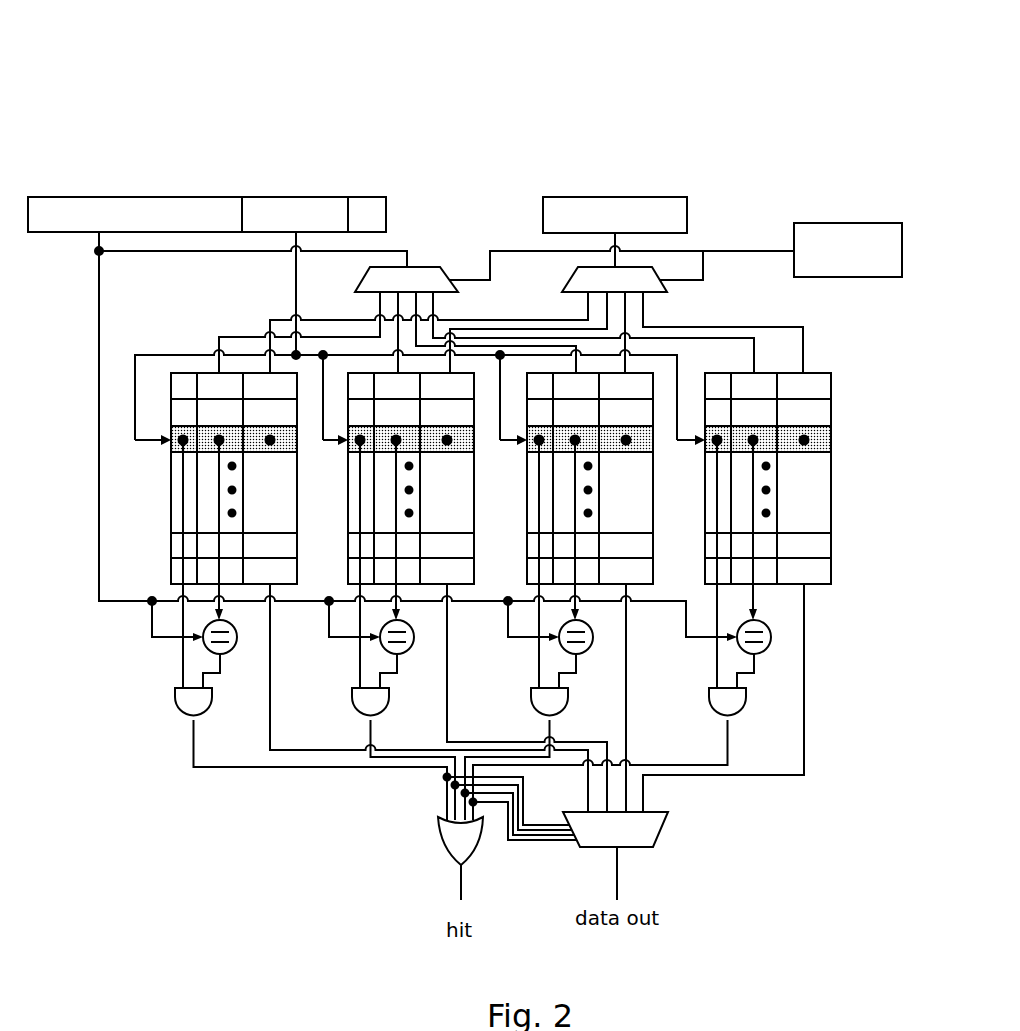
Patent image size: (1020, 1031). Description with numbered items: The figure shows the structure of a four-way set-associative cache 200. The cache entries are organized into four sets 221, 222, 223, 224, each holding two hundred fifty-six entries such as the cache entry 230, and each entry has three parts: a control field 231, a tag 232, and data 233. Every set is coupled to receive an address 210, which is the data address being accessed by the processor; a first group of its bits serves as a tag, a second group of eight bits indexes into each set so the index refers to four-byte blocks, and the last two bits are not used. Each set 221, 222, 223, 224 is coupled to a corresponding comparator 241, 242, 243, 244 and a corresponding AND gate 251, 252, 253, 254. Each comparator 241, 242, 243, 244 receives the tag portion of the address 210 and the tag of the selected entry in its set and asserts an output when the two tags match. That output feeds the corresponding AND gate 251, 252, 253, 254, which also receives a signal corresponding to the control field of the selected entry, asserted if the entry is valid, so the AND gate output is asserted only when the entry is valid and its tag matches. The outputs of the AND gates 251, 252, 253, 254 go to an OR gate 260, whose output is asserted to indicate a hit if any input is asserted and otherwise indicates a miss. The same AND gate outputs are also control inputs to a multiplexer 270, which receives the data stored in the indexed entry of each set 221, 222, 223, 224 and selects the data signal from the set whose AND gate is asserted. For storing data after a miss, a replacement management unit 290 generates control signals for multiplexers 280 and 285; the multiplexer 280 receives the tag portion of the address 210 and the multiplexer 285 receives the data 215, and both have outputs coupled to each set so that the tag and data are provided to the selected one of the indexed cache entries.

The cache 200 is at (600, 92).
The address 210 is at (386, 213).
The data 215 is at (667, 197).
The set of cache entries 221 is at (154, 500).
The set of cache entries 222 is at (336, 500).
The set of cache entries 223 is at (514, 499).
The set of cache entries 224 is at (804, 455).
The cache entry 230 is at (843, 387).
The control field 231 is at (718, 373).
The tag 232 is at (768, 373).
The data 233 is at (823, 371).
The comparator 241 is at (234, 648).
The comparator 242 is at (411, 648).
The comparator 243 is at (590, 648).
The comparator 244 is at (768, 648).
The AND gate 251 is at (175, 716).
The AND gate 252 is at (352, 716).
The AND gate 253 is at (531, 716).
The AND gate 254 is at (709, 716).
The OR gate 260 is at (438, 842).
The multiplexer 270 is at (664, 822).
The multiplexer 280 is at (424, 267).
The multiplexer 285 is at (575, 278).
The replacement management unit 290 is at (862, 223).